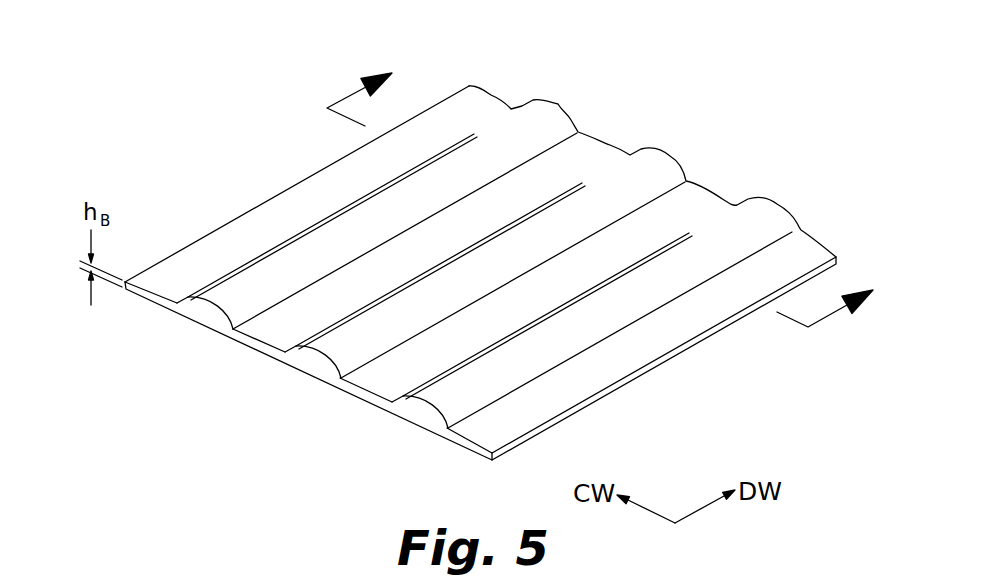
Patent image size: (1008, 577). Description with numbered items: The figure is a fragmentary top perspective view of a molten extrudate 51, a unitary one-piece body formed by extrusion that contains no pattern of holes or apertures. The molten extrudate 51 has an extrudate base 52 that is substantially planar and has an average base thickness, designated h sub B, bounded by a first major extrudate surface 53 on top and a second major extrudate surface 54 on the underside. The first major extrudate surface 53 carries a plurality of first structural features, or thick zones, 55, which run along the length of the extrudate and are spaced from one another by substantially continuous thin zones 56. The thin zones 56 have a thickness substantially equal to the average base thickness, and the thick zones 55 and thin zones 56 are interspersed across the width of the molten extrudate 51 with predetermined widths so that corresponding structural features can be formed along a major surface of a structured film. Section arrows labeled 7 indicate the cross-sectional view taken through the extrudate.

The section line 7- 7 is at (591, 215).
The molten extrudate 51 is at (454, 255).
The extrudate base 52 is at (440, 102).
The first major extrudate surface 53 is at (200, 248).
The second major extrudate surface 54 is at (141, 297).
The first structural features 55 is at (205, 300).
The thin zones 56 is at (257, 338).